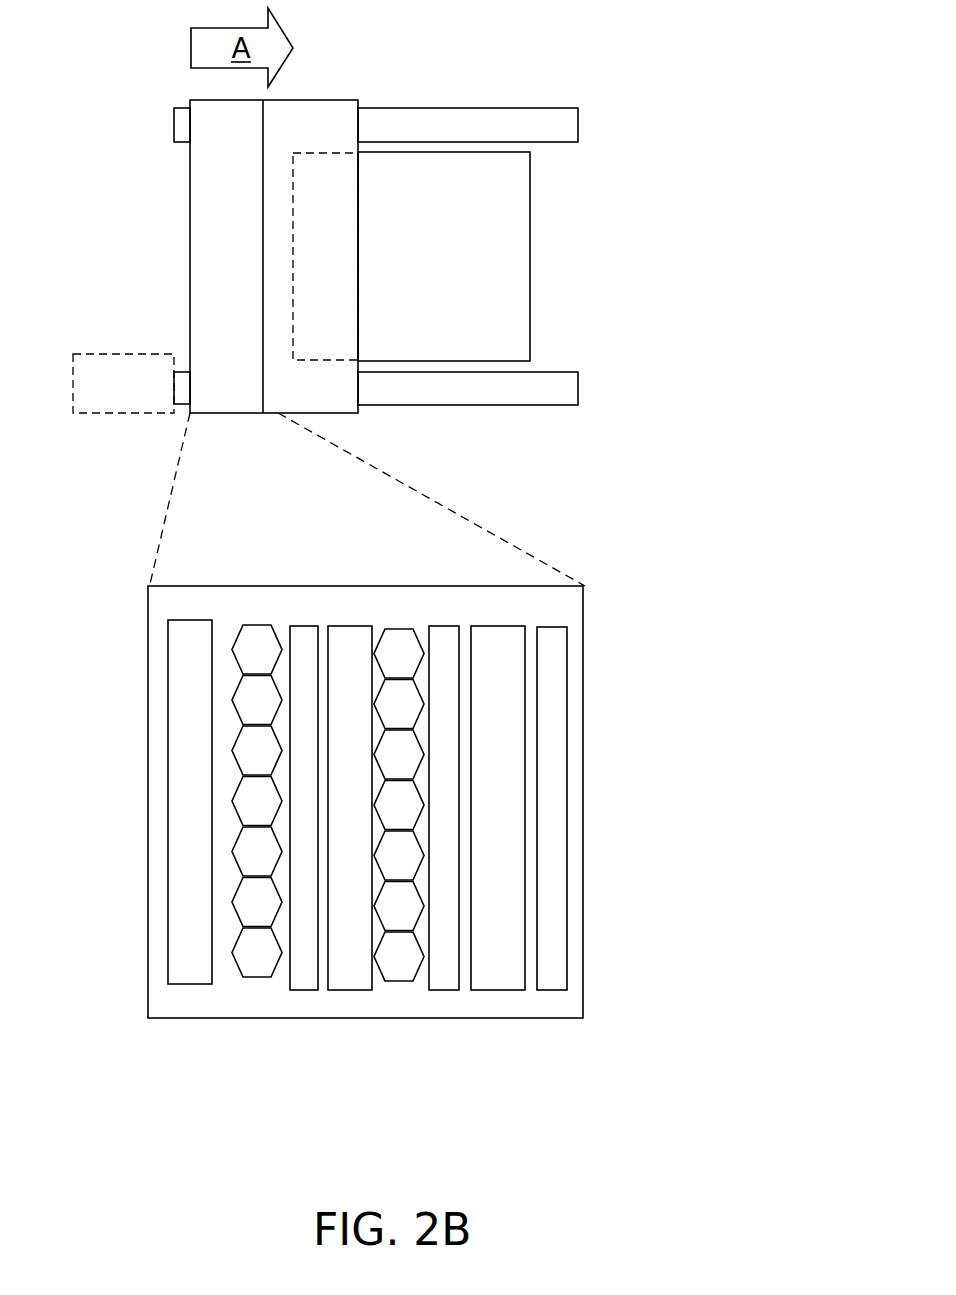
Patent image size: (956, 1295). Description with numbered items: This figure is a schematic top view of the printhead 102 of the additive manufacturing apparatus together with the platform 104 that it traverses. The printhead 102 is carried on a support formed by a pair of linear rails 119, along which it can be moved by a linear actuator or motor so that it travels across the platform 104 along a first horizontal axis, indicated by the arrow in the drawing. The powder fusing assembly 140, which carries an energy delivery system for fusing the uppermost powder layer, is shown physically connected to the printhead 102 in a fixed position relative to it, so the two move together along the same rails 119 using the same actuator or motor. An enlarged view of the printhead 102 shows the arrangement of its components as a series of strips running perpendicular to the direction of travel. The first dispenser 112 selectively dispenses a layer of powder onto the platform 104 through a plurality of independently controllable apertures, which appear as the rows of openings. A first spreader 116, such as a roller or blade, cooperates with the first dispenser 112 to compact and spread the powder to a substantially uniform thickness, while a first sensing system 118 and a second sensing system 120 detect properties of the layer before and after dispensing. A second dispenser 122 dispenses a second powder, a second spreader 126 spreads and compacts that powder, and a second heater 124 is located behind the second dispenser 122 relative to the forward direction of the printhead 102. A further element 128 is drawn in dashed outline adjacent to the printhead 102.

The printhead 102 is at (188, 271).
The platform 104 is at (436, 276).
The first dispenser 112 is at (244, 606).
The first spreader 116 is at (496, 970).
The first sensing system 118 is at (445, 972).
The linear rails 119 is at (418, 120).
The second sensing system 120 is at (190, 975).
The second dispenser 122 is at (553, 965).
The second heater 124 is at (348, 960).
The second spreader 126 is at (297, 978).
The dashed component 128 is at (145, 396).
The powder fusing assembly 140 is at (313, 130).